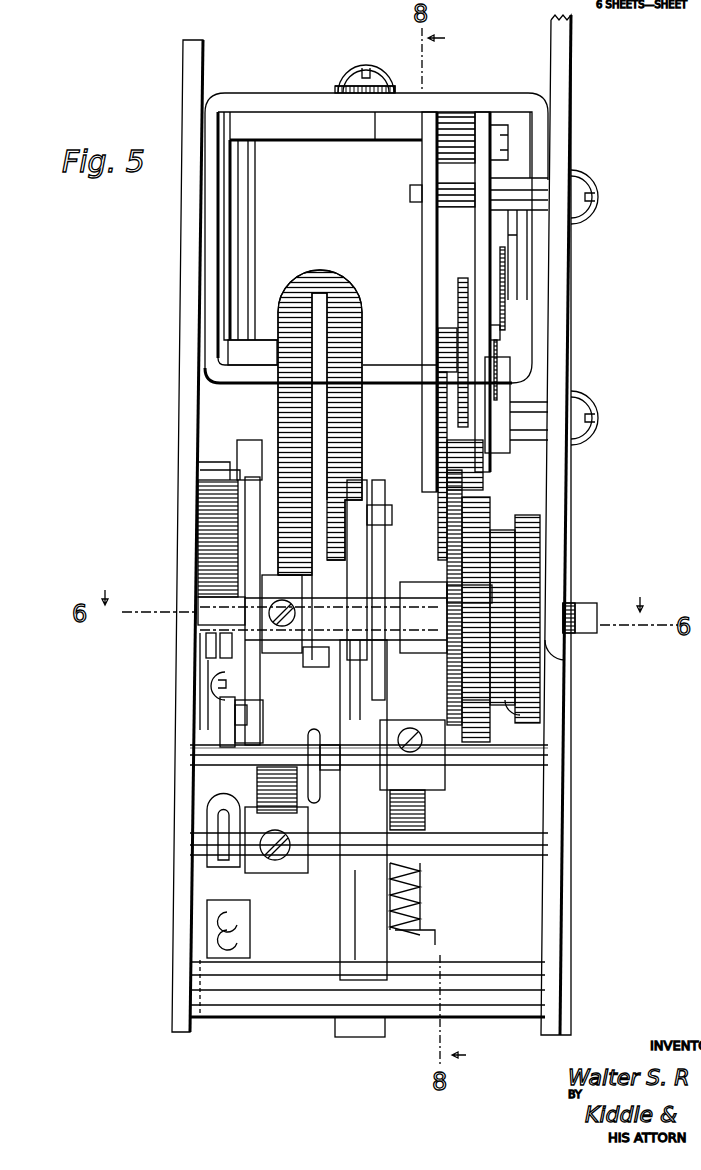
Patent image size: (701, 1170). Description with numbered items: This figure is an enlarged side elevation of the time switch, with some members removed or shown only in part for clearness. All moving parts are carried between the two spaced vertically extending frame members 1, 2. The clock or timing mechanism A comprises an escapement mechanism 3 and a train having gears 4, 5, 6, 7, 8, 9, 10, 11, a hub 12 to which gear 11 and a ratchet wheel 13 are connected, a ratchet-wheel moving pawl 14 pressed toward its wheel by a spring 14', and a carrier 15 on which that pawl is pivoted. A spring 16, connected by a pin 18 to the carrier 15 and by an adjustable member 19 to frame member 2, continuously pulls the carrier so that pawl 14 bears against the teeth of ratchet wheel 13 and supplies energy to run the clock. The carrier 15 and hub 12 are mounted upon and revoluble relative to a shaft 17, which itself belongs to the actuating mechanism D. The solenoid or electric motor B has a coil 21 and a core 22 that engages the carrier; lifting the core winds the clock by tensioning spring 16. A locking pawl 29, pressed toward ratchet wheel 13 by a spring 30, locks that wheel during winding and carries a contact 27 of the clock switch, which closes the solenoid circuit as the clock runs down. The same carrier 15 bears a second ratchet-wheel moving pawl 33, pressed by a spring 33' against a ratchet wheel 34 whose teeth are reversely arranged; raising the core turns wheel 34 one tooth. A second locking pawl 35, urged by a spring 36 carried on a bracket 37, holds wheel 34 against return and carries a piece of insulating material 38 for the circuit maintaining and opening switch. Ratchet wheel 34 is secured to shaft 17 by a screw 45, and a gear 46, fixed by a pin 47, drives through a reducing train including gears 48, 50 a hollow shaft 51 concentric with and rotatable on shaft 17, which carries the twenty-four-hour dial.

The vertically extending frame member 1 is at (552, 797).
The vertically extending frame member 2 is at (205, 820).
The escapement mechanism 3 is at (505, 320).
The gear 4 is at (510, 375).
The gear 5 is at (463, 280).
The gear 6 is at (438, 332).
The gear 7 is at (444, 412).
The gear 8 is at (470, 460).
The gear 9 is at (490, 498).
The gear 10 is at (452, 665).
The gear 11 is at (450, 712).
The hub 12 is at (395, 582).
The ratchet wheel 13 is at (385, 514).
The ratchet-wheel moving pawl 14 is at (401, 528).
The spring 14' is at (347, 465).
The carrier 15 is at (210, 512).
The spring 16 is at (205, 548).
The shaft 17 is at (590, 636).
The pin 18 is at (298, 450).
The adjustable member 19 is at (230, 722).
The coil 21 is at (323, 238).
The core 22 is at (345, 908).
The contact 27 is at (428, 880).
The locking pawl 29 is at (392, 775).
The spring 30 is at (425, 936).
The second ratchet-wheel moving pawl 33 is at (176, 488).
The spring 33' is at (169, 461).
The ratchet wheel 34 is at (262, 700).
The second locking pawl 35 is at (300, 774).
The spring 36 is at (215, 872).
The bracket 37 is at (205, 935).
The piece of insulating material 38 is at (255, 792).
The screw 45 is at (282, 628).
The gear 46 is at (505, 602).
The pin 47 is at (515, 560).
The gear 48 is at (540, 725).
The gear 50 is at (540, 515).
The hollow shaft 51 is at (560, 652).
The clock or timing mechanism A is at (500, 348).
The solenoid or electric motor B is at (236, 248).
The actuating mechanism D is at (202, 662).